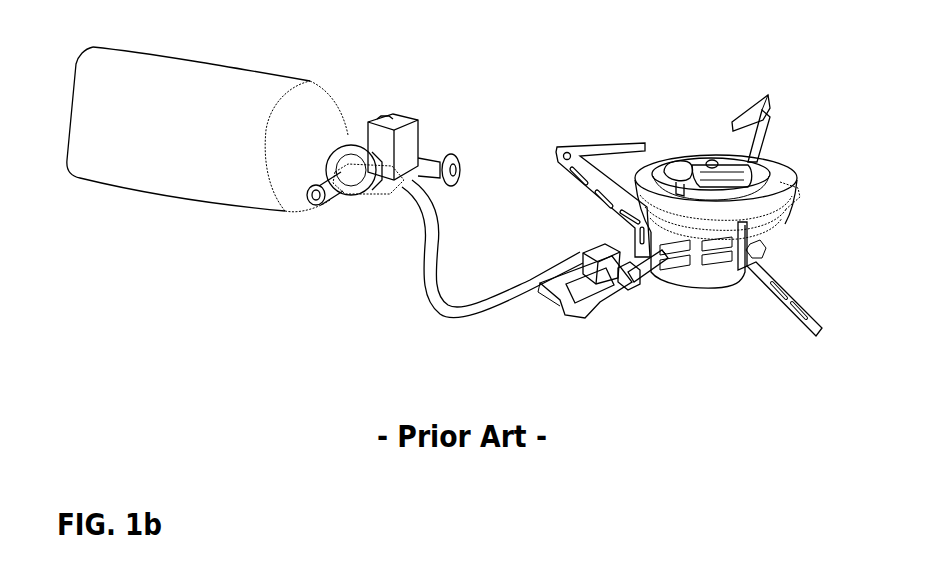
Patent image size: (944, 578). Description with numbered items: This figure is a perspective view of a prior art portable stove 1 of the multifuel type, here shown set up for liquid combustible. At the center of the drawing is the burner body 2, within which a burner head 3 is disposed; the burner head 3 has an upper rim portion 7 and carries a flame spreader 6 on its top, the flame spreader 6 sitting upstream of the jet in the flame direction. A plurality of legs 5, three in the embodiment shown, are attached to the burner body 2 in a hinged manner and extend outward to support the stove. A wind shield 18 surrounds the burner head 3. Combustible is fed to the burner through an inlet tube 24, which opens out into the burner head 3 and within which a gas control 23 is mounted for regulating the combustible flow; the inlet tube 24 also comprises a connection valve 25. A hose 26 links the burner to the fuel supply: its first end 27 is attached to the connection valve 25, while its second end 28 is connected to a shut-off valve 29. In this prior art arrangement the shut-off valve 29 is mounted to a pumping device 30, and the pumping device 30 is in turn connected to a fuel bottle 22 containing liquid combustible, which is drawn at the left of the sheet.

The portable stove 1 is at (534, 92).
The burner body 2 is at (772, 251).
The burner head 3 is at (712, 160).
The legs 5 is at (588, 146).
The flame spreader 6 is at (694, 168).
The upper rim portion 7 is at (670, 162).
The wind shield 18 is at (710, 272).
The fuel bottle 22 is at (207, 129).
The gas control 23 is at (582, 314).
The inlet tube 24 is at (666, 262).
The connection valve 25 is at (633, 280).
The hose 26 is at (437, 310).
The first end 27 is at (582, 256).
The second end 28 is at (365, 180).
The shut-off valve 29 is at (352, 192).
The pumping device 30 is at (405, 135).